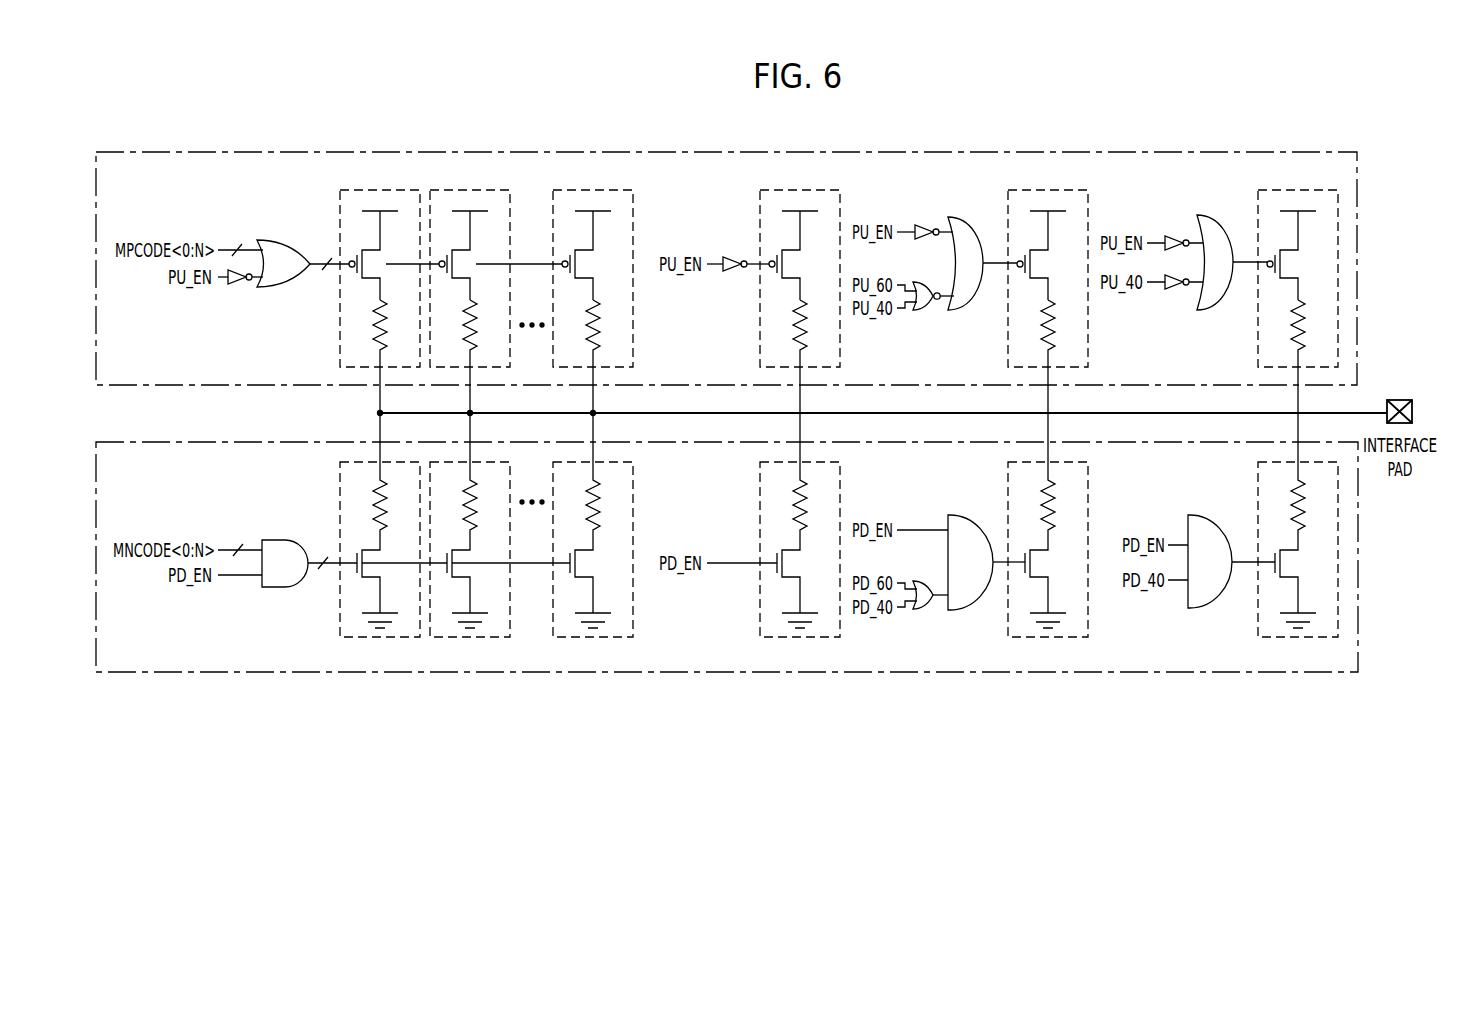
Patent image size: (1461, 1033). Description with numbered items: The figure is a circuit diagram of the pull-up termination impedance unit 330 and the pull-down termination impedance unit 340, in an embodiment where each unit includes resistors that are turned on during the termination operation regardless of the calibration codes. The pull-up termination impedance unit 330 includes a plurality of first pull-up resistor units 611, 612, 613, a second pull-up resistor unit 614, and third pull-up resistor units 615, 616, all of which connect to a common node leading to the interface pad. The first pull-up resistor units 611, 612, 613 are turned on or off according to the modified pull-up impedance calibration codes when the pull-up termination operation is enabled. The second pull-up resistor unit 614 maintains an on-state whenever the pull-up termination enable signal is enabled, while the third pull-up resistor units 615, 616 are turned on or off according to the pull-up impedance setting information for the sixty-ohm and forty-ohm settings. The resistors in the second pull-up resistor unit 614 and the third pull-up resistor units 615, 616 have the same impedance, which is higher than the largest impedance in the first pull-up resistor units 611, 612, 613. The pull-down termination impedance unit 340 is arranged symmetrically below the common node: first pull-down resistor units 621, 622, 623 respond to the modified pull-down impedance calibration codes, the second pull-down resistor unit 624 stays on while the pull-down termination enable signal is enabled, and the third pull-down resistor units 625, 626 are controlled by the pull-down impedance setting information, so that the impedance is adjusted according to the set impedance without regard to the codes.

The pull-up termination impedance unit 330 is at (1313, 151).
The pull-down termination impedance unit 340 is at (1317, 673).
The first pull-up resistor unit 611 is at (382, 188).
The first pull-up resistor unit 612 is at (472, 188).
The first pull-up resistor unit 613 is at (595, 188).
The second pull-up resistor unit 614 is at (802, 188).
The third pull-up resistor unit 615 is at (1050, 188).
The third pull-up resistor unit 616 is at (1300, 188).
The first pull-down resistor unit 621 is at (377, 638).
The first pull-down resistor unit 622 is at (467, 638).
The first pull-down resistor unit 623 is at (590, 638).
The second pull-down resistor unit 624 is at (797, 638).
The third pull-down resistor unit 625 is at (1045, 638).
The third pull-down resistor unit 626 is at (1295, 638).